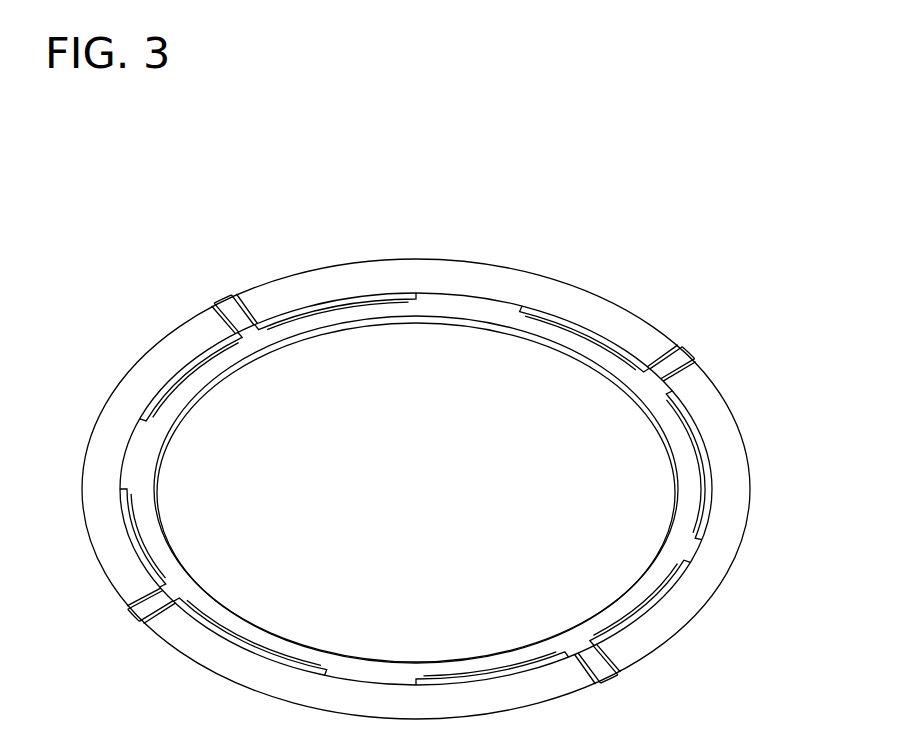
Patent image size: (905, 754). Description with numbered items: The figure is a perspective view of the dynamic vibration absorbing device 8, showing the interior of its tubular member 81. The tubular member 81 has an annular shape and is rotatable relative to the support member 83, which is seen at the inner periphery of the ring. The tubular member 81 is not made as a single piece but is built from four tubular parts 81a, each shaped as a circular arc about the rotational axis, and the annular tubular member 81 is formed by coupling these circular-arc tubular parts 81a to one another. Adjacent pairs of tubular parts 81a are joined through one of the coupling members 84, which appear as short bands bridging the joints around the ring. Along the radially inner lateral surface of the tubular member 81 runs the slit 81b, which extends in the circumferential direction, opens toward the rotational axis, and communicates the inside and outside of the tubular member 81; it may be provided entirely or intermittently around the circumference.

The dynamic vibration absorbing device 8 is at (375, 181).
The tubular member 81 is at (422, 262).
The tubular part 81a is at (526, 284).
The slit 81b is at (558, 327).
The support member 83 is at (651, 399).
The coupling member 84 is at (686, 352).